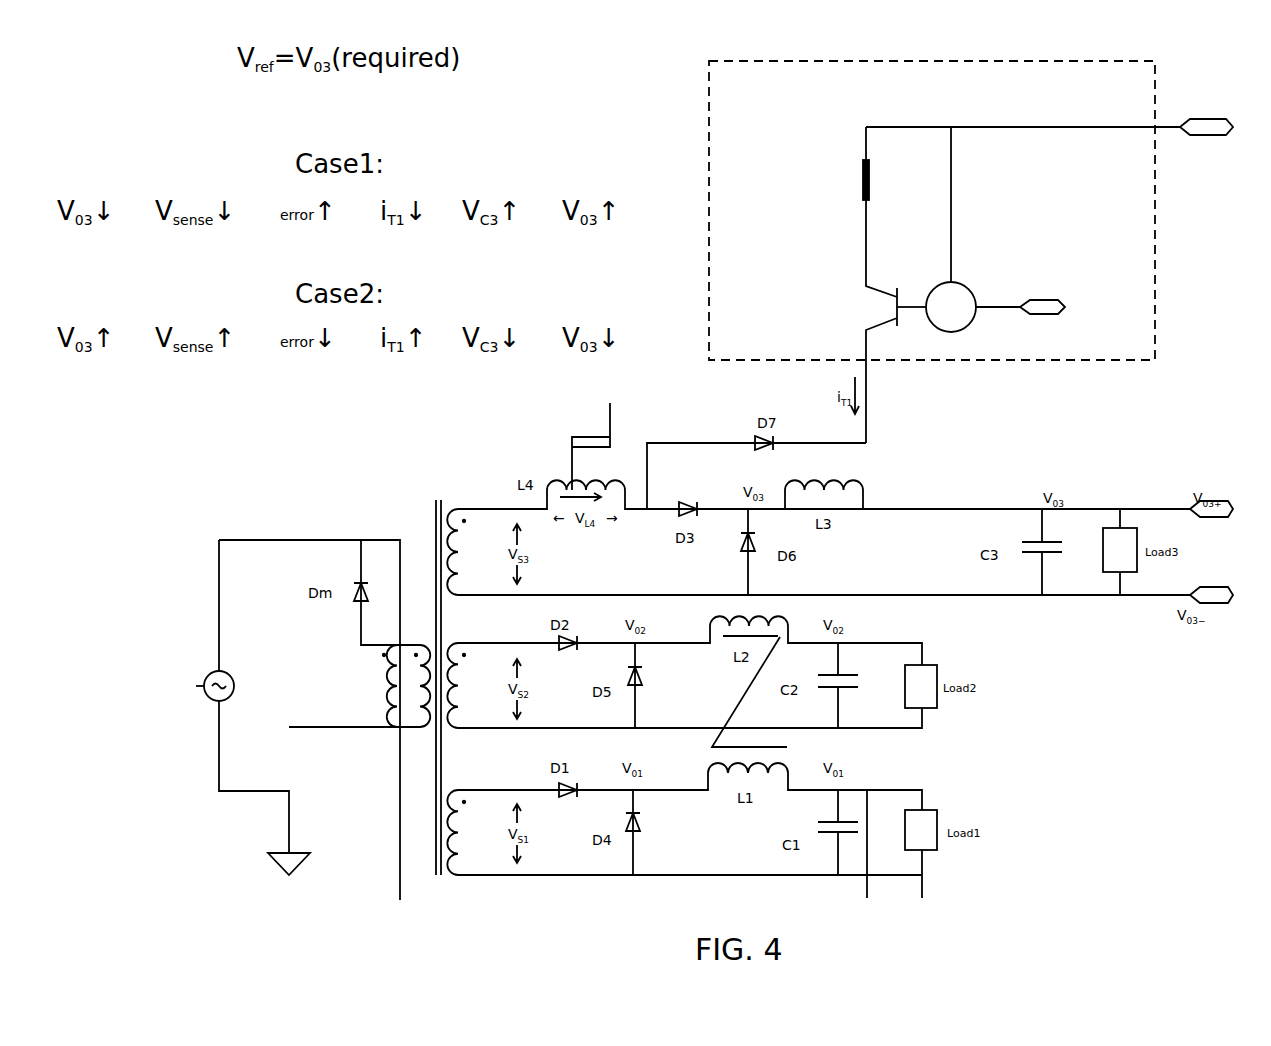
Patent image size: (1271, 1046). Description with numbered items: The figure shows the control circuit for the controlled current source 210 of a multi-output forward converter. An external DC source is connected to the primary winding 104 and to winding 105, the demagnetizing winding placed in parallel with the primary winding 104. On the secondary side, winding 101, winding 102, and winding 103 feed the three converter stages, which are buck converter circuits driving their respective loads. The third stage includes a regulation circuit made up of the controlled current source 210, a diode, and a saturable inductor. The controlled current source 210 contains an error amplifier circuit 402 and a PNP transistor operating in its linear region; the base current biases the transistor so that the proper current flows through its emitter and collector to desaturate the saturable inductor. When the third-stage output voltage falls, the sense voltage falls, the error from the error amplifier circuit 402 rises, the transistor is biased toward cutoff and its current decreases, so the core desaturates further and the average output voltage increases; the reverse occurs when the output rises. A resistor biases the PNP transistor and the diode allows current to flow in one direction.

The winding 101 is at (452, 828).
The winding 102 is at (458, 690).
The winding 103 is at (452, 546).
The primary winding 104 is at (427, 696).
The winding 105 is at (390, 690).
The controlled current source 210 is at (980, 244).
The error amplifier circuit 402 is at (947, 331).